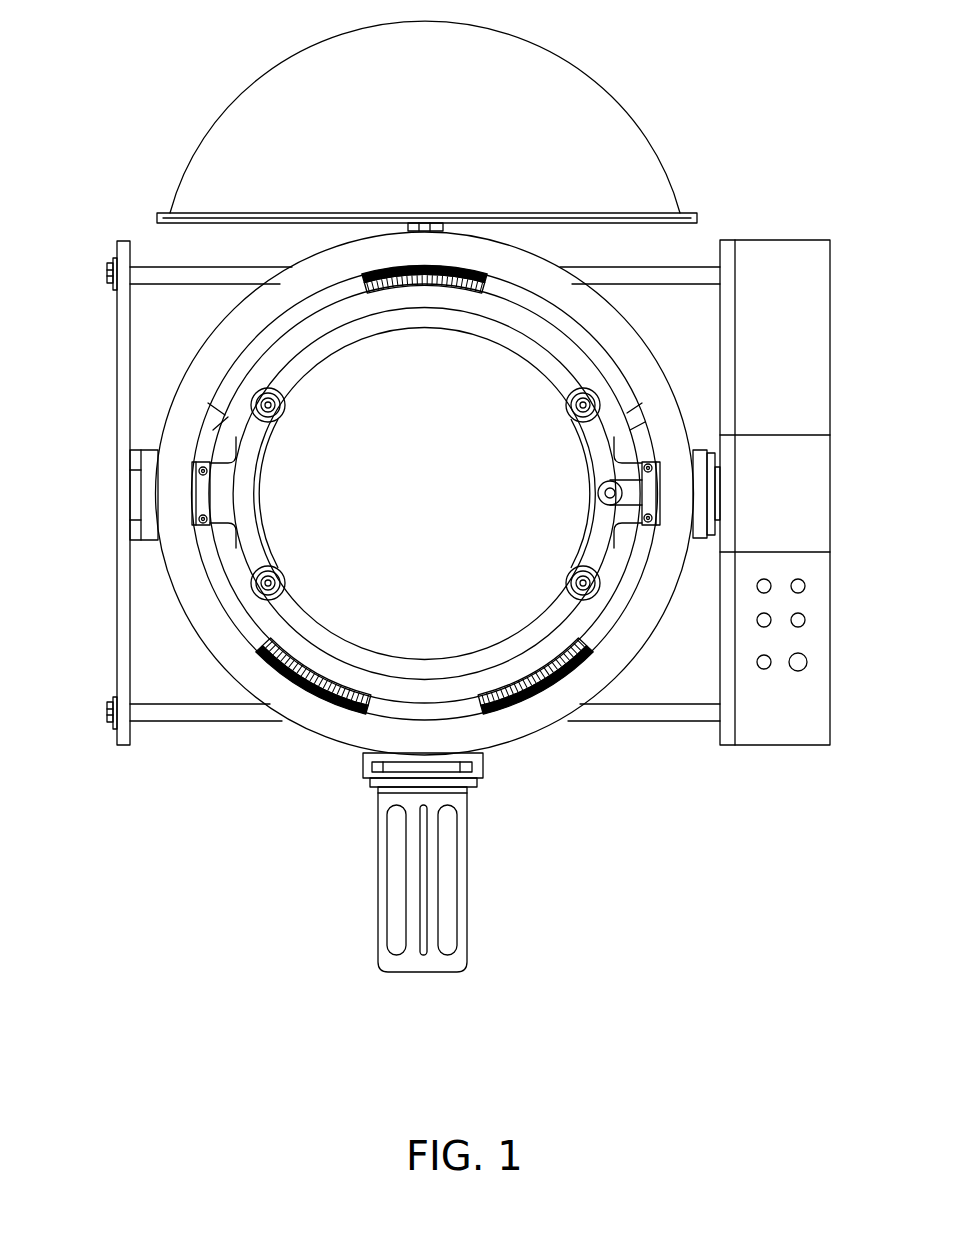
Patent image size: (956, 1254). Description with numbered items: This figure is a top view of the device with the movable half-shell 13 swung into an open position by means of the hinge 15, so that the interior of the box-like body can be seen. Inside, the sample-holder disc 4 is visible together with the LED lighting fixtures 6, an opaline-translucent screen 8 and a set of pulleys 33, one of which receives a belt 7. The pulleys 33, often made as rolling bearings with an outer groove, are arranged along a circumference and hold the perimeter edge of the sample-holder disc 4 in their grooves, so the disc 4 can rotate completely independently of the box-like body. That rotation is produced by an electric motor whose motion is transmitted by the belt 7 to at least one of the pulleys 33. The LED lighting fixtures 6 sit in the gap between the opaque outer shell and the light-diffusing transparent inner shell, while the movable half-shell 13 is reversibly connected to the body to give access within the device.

The sample-holder disc 4 is at (503, 378).
The LED lighting fixtures 6 is at (407, 290).
The belt 7 is at (632, 522).
The opaline-translucent screen 8 is at (263, 373).
The movable half-shell 13 is at (308, 105).
The hinge 15 is at (428, 227).
The pulleys 33 is at (262, 408).